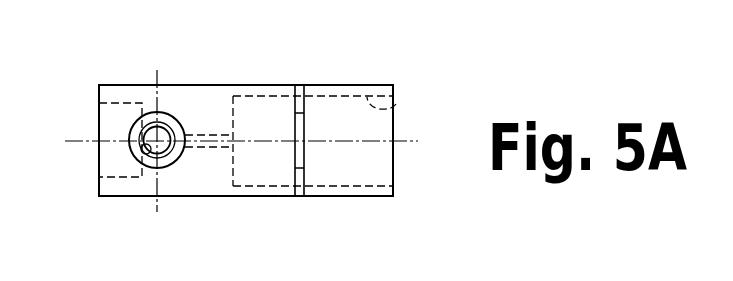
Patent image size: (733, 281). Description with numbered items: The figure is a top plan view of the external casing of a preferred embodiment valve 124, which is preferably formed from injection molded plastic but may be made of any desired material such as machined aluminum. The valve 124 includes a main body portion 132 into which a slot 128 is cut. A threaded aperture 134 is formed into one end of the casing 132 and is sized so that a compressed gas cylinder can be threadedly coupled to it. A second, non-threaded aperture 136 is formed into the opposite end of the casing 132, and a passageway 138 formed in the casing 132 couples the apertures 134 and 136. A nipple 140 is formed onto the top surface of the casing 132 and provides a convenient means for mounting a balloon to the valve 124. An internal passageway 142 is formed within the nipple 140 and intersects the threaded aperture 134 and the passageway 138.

The valve 124 is at (394, 47).
The slot 128 is at (300, 85).
The main body portion 132 is at (213, 85).
The threaded aperture 134 is at (110, 172).
The non-threaded aperture 136 is at (396, 104).
The passageway 138 is at (207, 150).
The nipple 140 is at (153, 112).
The internal passageway 142 is at (146, 153).